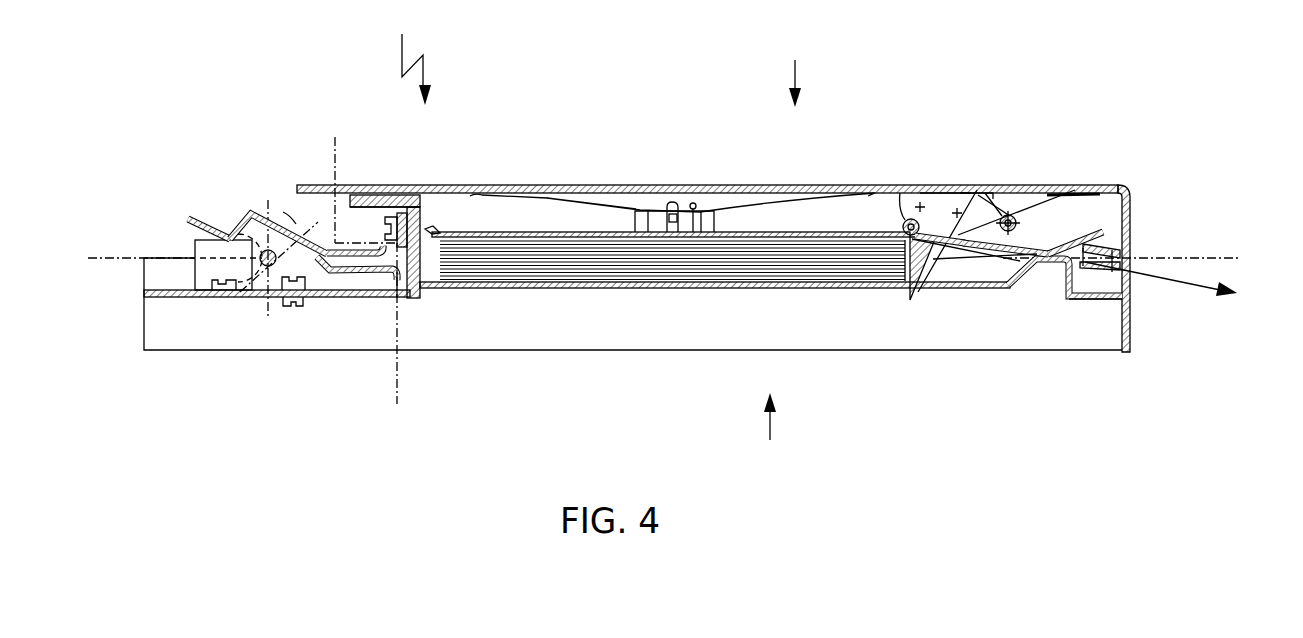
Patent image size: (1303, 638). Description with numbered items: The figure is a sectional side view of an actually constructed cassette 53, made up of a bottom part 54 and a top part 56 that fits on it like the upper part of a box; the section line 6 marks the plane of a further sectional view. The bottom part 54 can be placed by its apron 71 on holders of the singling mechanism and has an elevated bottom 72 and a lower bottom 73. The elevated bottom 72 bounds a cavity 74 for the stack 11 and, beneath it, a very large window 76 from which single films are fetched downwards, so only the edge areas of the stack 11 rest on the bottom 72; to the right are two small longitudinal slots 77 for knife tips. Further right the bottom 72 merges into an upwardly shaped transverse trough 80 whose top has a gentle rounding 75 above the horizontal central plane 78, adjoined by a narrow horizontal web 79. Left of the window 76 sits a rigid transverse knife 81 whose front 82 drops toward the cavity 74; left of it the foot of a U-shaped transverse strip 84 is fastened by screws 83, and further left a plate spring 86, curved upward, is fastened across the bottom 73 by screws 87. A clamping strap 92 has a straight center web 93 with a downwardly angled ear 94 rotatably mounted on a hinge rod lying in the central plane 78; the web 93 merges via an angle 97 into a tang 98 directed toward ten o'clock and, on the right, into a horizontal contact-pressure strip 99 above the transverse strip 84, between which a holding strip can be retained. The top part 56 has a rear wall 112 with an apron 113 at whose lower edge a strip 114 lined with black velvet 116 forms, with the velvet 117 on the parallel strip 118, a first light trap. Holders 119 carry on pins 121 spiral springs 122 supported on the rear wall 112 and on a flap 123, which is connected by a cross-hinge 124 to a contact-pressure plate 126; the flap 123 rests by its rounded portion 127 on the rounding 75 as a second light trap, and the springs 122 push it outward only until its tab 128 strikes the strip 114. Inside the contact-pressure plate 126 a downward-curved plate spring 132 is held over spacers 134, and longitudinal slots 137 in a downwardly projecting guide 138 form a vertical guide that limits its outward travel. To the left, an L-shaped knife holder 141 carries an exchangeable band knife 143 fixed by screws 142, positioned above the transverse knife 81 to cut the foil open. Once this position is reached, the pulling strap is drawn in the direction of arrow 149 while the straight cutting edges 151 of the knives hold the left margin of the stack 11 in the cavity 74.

The section line 6- 6 is at (335, 137).
The stack 11 is at (580, 258).
The cassette 53 is at (410, 57).
The bottom part 54 is at (770, 429).
The top part 56 is at (794, 71).
The apron 71 is at (716, 318).
The elevated bottom 72 is at (905, 262).
The bottom 73 is at (240, 298).
The cavity 74 is at (838, 195).
The rounding 75 is at (985, 268).
The window 76 is at (655, 289).
The longitudinal slots 77 is at (926, 292).
The horizontal central plane 78 is at (131, 258).
The horizontal web 79 is at (1090, 300).
The transverse trough 80 is at (1040, 280).
The transverse knife 81 is at (388, 295).
The front 82 is at (425, 272).
The screws 83 is at (290, 300).
The transverse strip 84 is at (350, 294).
The plate spring 86 is at (205, 270).
The screws 87 is at (205, 300).
The clamping strap 92 is at (320, 190).
The center web 93 is at (284, 212).
The ear 94 is at (266, 249).
The angle 97 is at (232, 236).
The tang 98 is at (189, 216).
The contact-pressure strip 99 is at (340, 248).
The rear wall 112 is at (780, 190).
The apron 113 is at (1132, 205).
The strip 114 is at (1133, 225).
The black velvet 116 is at (1133, 259).
The velvet 117 is at (1118, 272).
The parallel strip 118 is at (1120, 276).
The holders 119 is at (1000, 212).
The pins 121 is at (1016, 221).
The spiral springs 122 is at (1052, 194).
The flap 123 is at (975, 262).
The cross-hinge 124 is at (915, 194).
The contact-pressure plate 126 is at (904, 220).
The rounded portion 127 is at (1110, 190).
The tab 128 is at (1140, 200).
The curved plate spring 132 is at (612, 233).
The spacers 134 is at (636, 222).
The longitudinal slots 137 is at (672, 202).
The guide 138 is at (696, 204).
The knife holder 141 is at (455, 190).
The screws 142 is at (400, 213).
The band knife 143 is at (435, 227).
The arrow 149 is at (1161, 310).
The straight cutting edges 151 is at (887, 258).